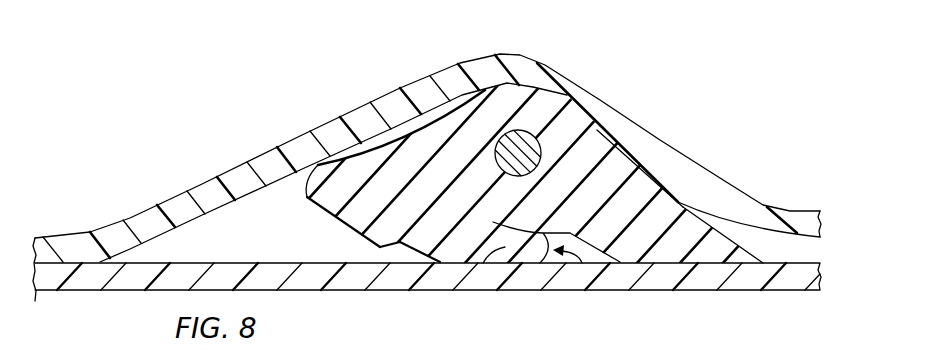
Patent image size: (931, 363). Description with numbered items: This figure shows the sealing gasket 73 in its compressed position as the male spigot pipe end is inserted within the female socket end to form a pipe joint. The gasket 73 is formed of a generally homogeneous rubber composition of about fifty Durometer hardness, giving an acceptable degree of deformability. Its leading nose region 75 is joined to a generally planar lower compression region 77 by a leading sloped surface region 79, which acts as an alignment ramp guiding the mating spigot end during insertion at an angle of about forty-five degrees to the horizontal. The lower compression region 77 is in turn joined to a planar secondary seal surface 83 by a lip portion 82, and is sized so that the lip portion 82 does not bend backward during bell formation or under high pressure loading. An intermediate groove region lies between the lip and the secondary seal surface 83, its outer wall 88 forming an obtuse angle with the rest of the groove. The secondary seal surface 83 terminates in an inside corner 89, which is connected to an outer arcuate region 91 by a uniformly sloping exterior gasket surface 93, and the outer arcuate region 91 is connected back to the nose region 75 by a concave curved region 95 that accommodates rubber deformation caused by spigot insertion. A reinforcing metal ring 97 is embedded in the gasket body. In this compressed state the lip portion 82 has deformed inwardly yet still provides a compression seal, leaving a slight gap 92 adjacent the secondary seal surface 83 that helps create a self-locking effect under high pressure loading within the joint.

The gasket 73 is at (640, 190).
The leading nose region 75 is at (315, 182).
The lower compression region 77 is at (377, 247).
The leading sloped surface region 79 is at (353, 229).
The lip portion 82 is at (507, 247).
The secondary seal surface 83 is at (747, 267).
The outer wall 88 is at (582, 263).
The inside corner 89 is at (730, 220).
The outer arcuate region 91 is at (515, 54).
The gap 92 is at (561, 267).
The uniformly sloping exterior gasket surface 93 is at (720, 250).
The concave curved region 95 is at (428, 125).
The metal ring 97 is at (534, 130).